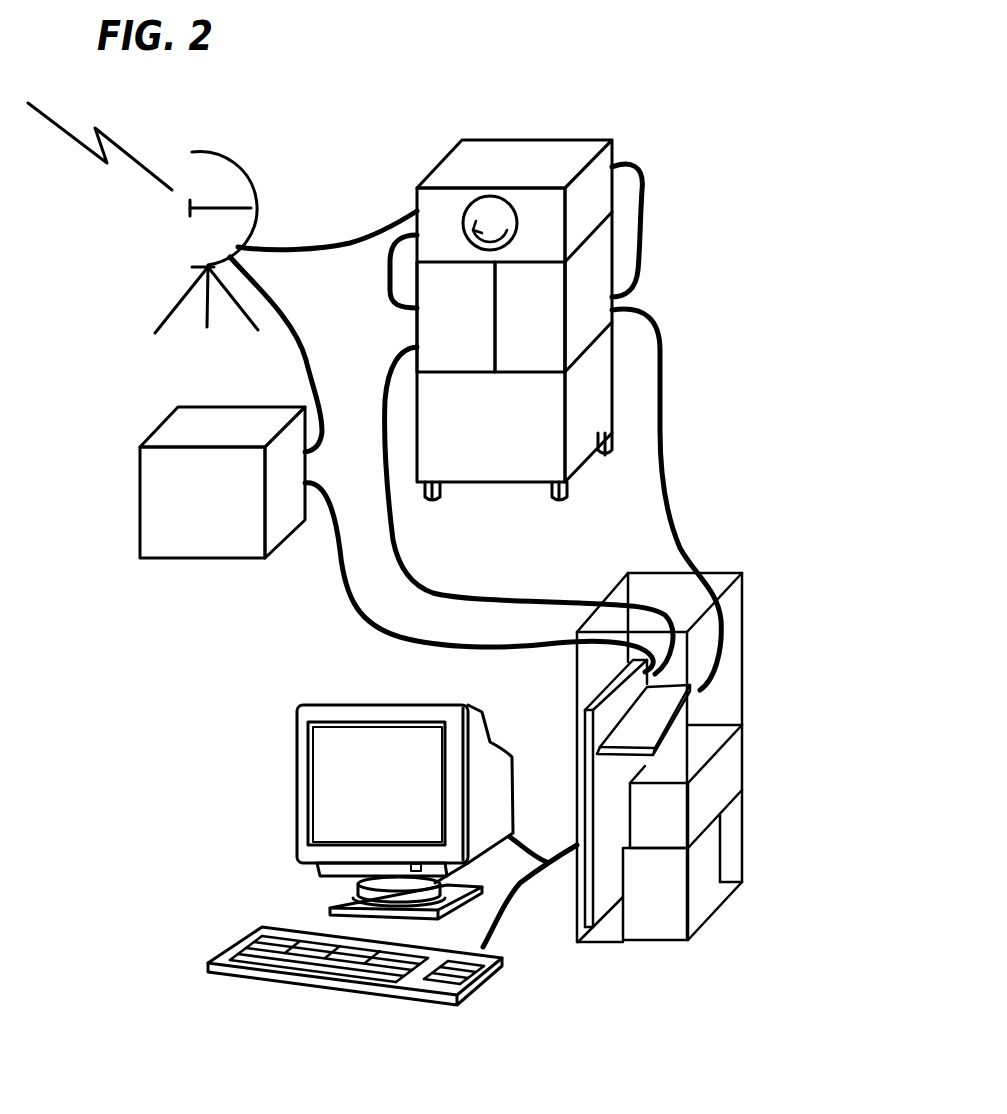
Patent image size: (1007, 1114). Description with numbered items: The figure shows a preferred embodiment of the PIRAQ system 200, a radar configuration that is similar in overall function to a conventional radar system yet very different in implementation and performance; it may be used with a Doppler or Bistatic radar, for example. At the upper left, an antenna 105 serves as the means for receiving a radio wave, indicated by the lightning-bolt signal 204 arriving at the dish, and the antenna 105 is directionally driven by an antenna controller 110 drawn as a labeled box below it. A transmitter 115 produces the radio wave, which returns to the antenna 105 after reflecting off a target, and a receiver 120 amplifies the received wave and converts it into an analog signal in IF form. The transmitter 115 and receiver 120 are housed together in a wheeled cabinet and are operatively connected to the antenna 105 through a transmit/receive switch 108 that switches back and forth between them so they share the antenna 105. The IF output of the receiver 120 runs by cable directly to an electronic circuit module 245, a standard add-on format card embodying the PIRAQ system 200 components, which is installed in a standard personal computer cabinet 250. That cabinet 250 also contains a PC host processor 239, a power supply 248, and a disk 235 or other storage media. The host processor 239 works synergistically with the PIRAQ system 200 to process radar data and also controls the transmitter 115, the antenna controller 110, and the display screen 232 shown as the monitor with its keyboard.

The antenna 105 is at (230, 163).
The transmit/receive switch 108 is at (557, 147).
The antenna controller 110 is at (152, 540).
The transmitter 115 is at (417, 323).
The receiver 120 is at (592, 294).
The PIRAQ system 200 is at (775, 458).
The transmitted/received signal 204 is at (63, 137).
The display screen 232 is at (322, 705).
The disk 235 is at (652, 927).
The PC host processor 239 is at (585, 775).
The electronic circuit module 245 is at (700, 702).
The power supply 248 is at (727, 773).
The personal computer cabinet 250 is at (747, 825).